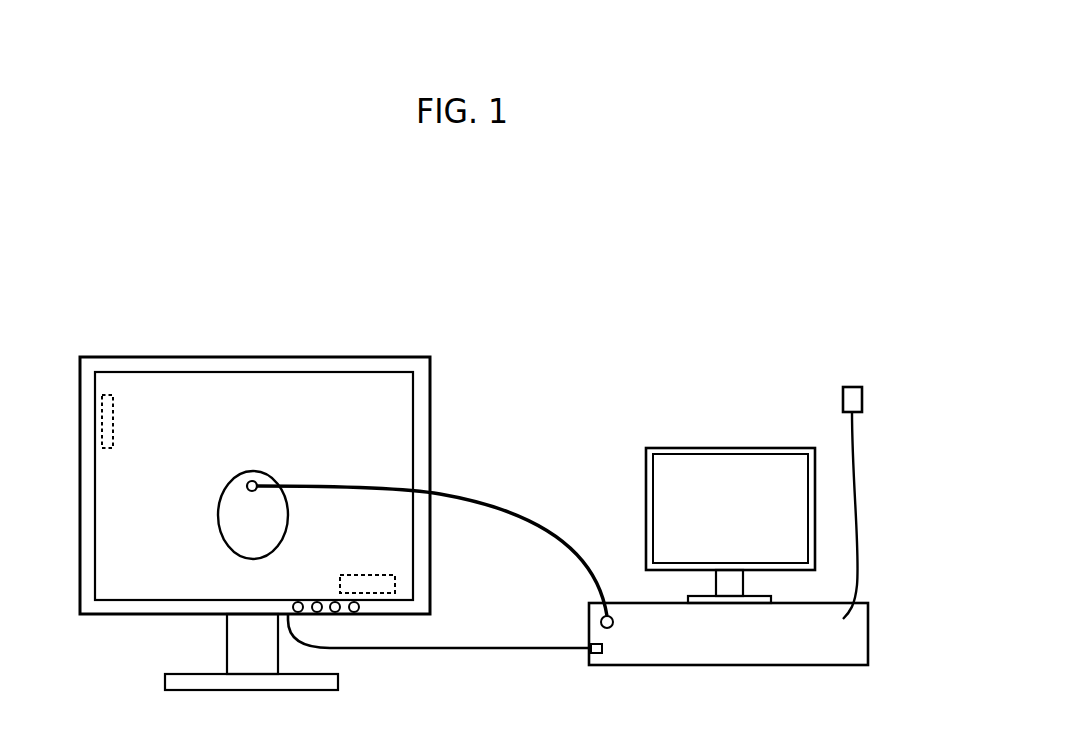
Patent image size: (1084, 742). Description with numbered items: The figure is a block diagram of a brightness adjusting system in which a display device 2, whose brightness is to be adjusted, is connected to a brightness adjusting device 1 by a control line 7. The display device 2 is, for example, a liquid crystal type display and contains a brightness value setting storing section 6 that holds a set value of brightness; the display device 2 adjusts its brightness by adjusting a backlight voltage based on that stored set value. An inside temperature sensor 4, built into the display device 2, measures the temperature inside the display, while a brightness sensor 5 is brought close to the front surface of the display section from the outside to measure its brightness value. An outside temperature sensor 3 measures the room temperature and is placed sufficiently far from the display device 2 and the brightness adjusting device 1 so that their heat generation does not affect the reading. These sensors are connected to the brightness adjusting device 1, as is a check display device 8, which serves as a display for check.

The brightness adjusting device 1 is at (735, 666).
The display device 2 is at (128, 620).
The outside temperature sensor 3 is at (851, 387).
The inside temperature sensor 4 is at (105, 395).
The brightness sensor 5 is at (266, 472).
The brightness value setting storing section 6 is at (383, 573).
The control line 7 is at (453, 650).
The check display device 8 is at (705, 447).